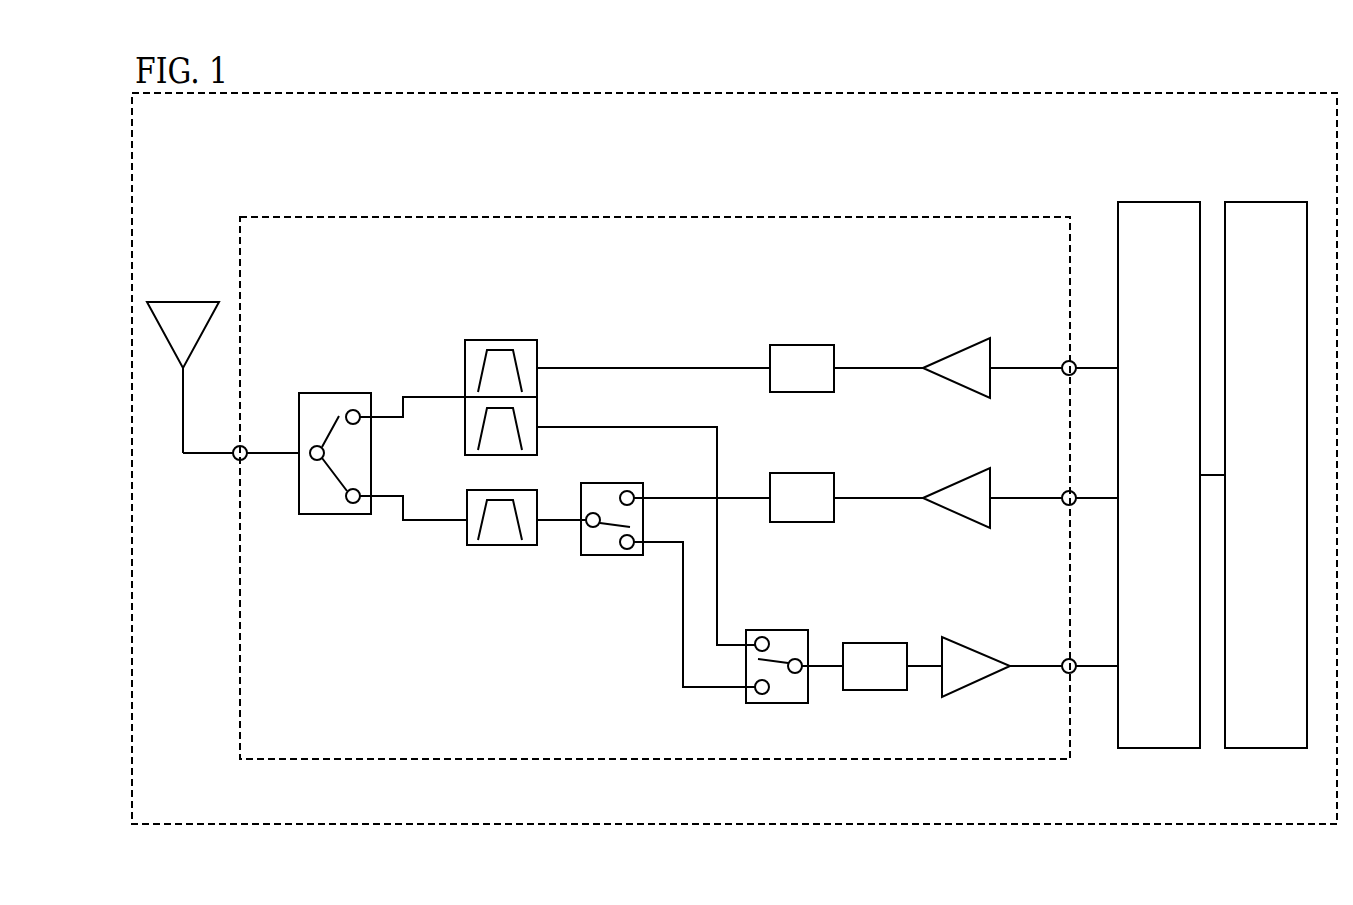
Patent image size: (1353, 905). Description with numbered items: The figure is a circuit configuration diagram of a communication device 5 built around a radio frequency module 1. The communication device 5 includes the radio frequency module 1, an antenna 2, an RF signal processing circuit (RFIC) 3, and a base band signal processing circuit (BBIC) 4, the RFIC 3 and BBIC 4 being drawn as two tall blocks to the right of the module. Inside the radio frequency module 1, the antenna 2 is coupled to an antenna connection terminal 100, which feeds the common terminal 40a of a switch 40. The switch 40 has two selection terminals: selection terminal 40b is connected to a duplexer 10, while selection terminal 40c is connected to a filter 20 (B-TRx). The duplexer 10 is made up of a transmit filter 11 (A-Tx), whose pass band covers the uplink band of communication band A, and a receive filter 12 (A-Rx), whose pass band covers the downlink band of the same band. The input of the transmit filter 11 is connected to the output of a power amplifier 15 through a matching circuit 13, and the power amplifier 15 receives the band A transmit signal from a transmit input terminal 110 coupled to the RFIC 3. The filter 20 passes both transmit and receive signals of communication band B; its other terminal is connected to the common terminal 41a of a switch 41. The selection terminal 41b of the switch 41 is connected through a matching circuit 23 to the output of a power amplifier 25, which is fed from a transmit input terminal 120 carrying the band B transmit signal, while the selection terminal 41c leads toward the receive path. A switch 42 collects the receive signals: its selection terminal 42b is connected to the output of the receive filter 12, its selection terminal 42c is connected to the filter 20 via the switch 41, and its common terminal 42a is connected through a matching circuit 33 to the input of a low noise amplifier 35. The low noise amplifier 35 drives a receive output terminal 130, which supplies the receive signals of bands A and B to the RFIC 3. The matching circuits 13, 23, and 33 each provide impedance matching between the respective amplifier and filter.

The radio frequency module 1 is at (1018, 217).
The antenna 2 is at (189, 300).
The RF signal processing circuit (RFIC) 3 is at (1158, 202).
The base band signal processing circuit (BBIC) 4 is at (1268, 202).
The communication device 5 is at (1296, 93).
The duplexer 10 is at (617, 478).
The transmit filter 11 is at (540, 352).
The receive filter 12 is at (610, 521).
The matching circuit 13 is at (818, 345).
The power amplifier 15 is at (950, 388).
The filter 20 is at (465, 535).
The matching circuit 23 is at (818, 473).
The power amplifier 25 is at (950, 518).
The matching circuit 33 is at (875, 643).
The low noise amplifier 35 is at (962, 650).
The switch 40 is at (358, 456).
The common terminal 40a is at (311, 447).
The selection terminal 40b is at (355, 410).
The selection terminal 40c is at (350, 515).
The switch 41 is at (660, 566).
The common terminal 41a is at (596, 532).
The selection terminal 41b is at (632, 492).
The selection terminal 41c is at (627, 555).
The switch 42 is at (791, 667).
The common terminal 42a is at (802, 660).
The selection terminal 42b is at (757, 637).
The selection terminal 42c is at (762, 703).
The antenna connection terminal 100 is at (235, 460).
The transmit input terminal 110 is at (1062, 362).
The transmit input terminal 120 is at (1062, 492).
The receive output terminal 130 is at (1062, 659).